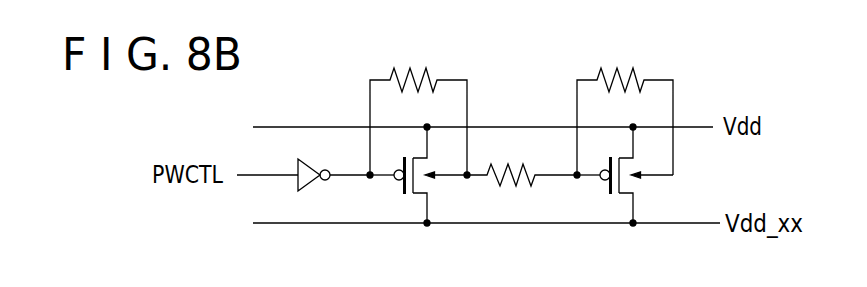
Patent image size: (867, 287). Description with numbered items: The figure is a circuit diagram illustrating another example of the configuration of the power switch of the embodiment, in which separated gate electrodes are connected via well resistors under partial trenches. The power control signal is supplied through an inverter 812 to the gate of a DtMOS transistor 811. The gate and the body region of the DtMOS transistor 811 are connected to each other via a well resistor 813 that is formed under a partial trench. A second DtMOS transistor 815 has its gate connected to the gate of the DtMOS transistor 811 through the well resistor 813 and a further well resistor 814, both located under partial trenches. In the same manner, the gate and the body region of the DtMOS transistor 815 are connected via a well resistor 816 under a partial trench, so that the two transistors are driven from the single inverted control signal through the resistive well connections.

The DtMOS transistor 811 is at (413, 200).
The inverter 812 is at (315, 194).
The well resistor 813 is at (423, 63).
The well resistor 814 is at (518, 193).
The DtMOS transistor 815 is at (617, 200).
The well resistor 816 is at (628, 62).